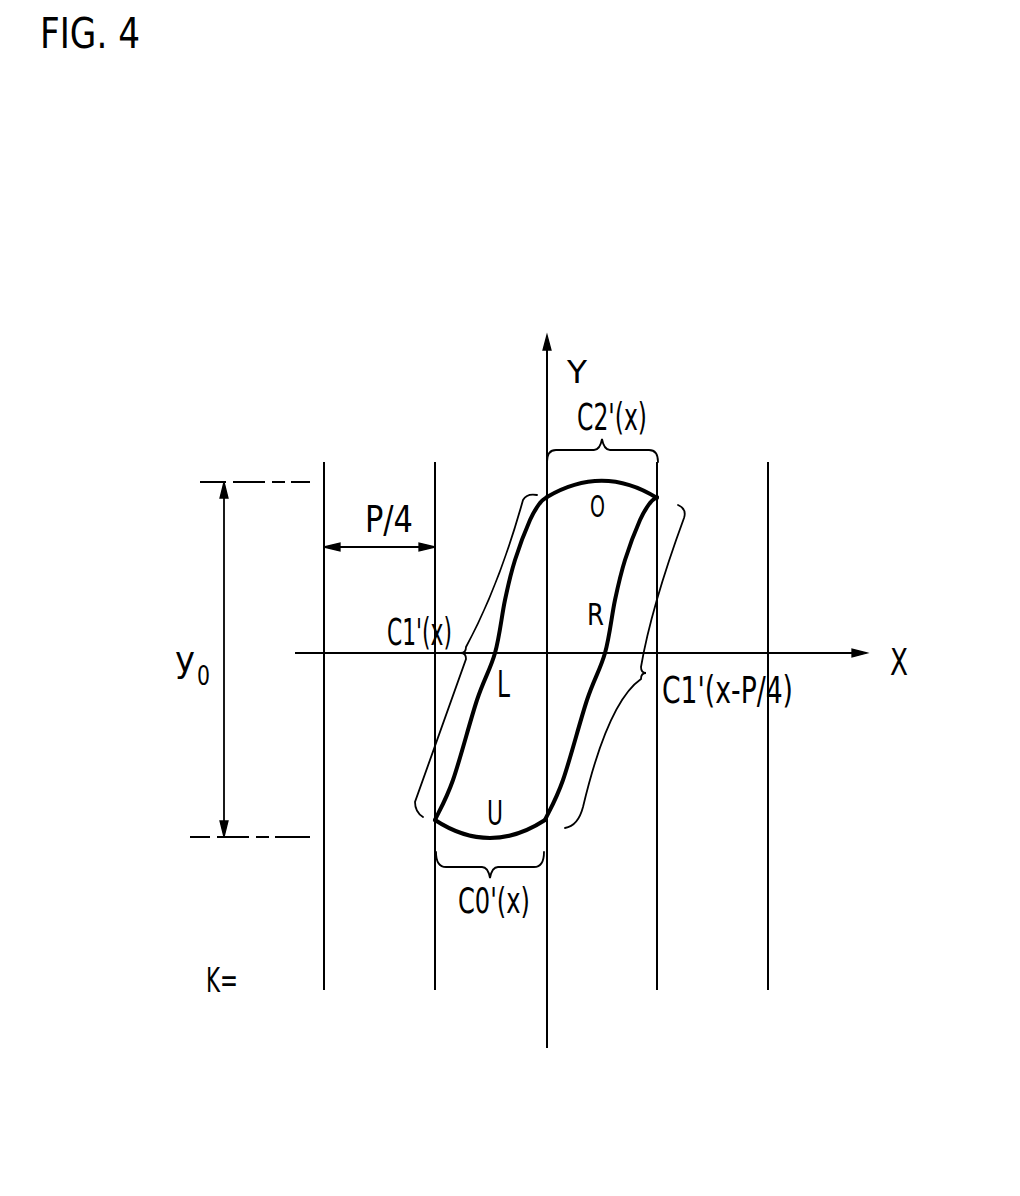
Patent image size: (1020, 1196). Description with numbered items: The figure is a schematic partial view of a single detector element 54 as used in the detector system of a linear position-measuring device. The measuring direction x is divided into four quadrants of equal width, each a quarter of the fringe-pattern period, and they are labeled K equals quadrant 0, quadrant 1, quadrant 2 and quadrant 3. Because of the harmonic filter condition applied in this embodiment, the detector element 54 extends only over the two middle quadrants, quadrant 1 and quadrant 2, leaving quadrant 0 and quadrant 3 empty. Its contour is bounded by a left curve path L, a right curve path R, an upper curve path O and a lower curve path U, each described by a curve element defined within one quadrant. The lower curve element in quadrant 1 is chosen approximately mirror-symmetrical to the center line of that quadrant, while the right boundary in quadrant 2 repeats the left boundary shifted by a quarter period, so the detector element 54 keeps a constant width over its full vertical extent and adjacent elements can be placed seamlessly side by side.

The detector element 54 is at (484, 497).
The quadrant K0 0 is at (379, 731).
The quadrant K1 1 is at (491, 731).
The quadrant K2 2 is at (602, 731).
The quadrant K3 3 is at (712, 731).